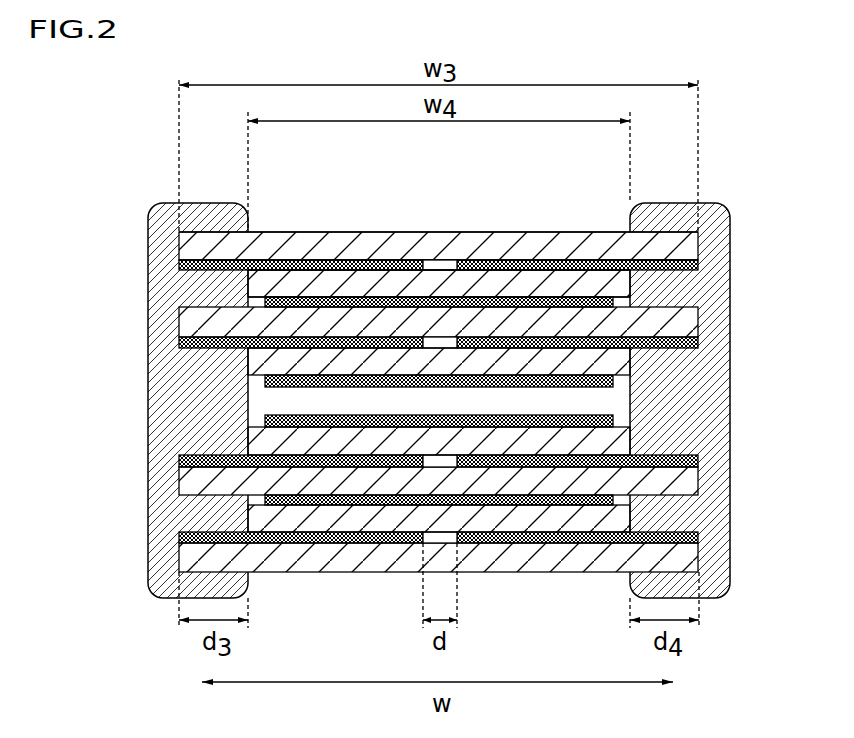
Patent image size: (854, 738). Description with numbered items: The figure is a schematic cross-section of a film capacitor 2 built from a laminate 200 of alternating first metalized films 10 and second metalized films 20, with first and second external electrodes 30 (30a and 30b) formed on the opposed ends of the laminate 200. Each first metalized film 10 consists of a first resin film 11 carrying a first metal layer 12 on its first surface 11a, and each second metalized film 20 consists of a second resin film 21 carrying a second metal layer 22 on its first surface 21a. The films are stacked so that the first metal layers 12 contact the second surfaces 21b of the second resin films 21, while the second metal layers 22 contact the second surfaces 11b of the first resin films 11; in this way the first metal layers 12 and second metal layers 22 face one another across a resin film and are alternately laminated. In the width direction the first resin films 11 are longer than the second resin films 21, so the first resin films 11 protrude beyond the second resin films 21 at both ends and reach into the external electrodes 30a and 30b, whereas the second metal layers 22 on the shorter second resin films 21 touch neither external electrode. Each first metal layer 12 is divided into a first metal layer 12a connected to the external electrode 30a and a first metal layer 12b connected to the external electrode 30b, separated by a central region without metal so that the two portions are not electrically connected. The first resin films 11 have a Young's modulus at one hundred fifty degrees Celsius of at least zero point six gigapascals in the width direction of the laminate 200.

The film capacitor 2 is at (141, 112).
The first metalized film 10 is at (364, 353).
The first resin film 11 is at (187, 248).
The first surface of the first resin film 11a is at (222, 268).
The second surface of the first resin film 11b is at (227, 232).
The first metal layer 12 is at (395, 338).
The first metal layer connected to external electrode 30a 12a is at (370, 266).
The first metal layer connected to external electrode 30b 12b is at (495, 263).
The second metalized film 20 is at (548, 378).
The second resin film 21 is at (623, 285).
The first surface of the second resin film 21a is at (593, 306).
The second surface of the second resin film 21b is at (603, 264).
The second metal layer 22 is at (585, 301).
The external electrode 30 is at (439, 433).
The first external electrode 30a is at (156, 588).
The second external electrode 30b is at (720, 576).
The laminate 200 is at (539, 588).